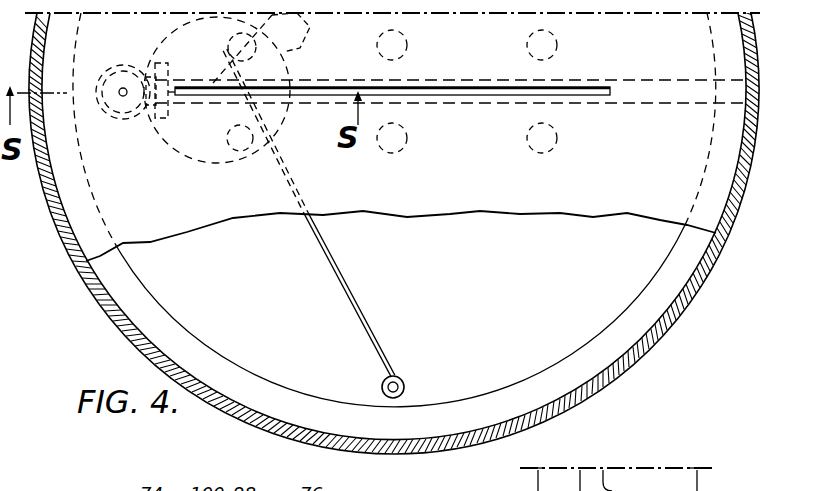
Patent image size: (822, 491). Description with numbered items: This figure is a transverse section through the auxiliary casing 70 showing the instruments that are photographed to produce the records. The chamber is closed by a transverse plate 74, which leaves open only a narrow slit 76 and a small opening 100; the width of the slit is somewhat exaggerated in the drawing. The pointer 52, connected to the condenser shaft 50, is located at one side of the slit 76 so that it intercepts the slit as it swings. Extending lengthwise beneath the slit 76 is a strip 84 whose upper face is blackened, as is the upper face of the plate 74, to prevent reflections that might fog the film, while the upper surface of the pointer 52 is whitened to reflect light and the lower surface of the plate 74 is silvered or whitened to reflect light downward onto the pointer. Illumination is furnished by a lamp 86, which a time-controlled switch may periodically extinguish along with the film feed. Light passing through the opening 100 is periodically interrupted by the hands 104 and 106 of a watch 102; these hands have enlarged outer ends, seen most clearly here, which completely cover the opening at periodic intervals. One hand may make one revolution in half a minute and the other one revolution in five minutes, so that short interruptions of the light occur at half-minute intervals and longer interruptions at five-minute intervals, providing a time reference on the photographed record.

The condenser shaft 50 is at (405, 384).
The pointer 52 is at (345, 280).
The auxiliary casing 70 is at (700, 285).
The transverse plate 74 is at (483, 204).
The slit 76 is at (447, 89).
The strip 84 is at (642, 80).
The lamp 86 is at (240, 151).
The small opening 100 is at (125, 88).
The watch 102 is at (162, 140).
The watch hand 104 is at (119, 113).
The watch hand 106 is at (308, 44).